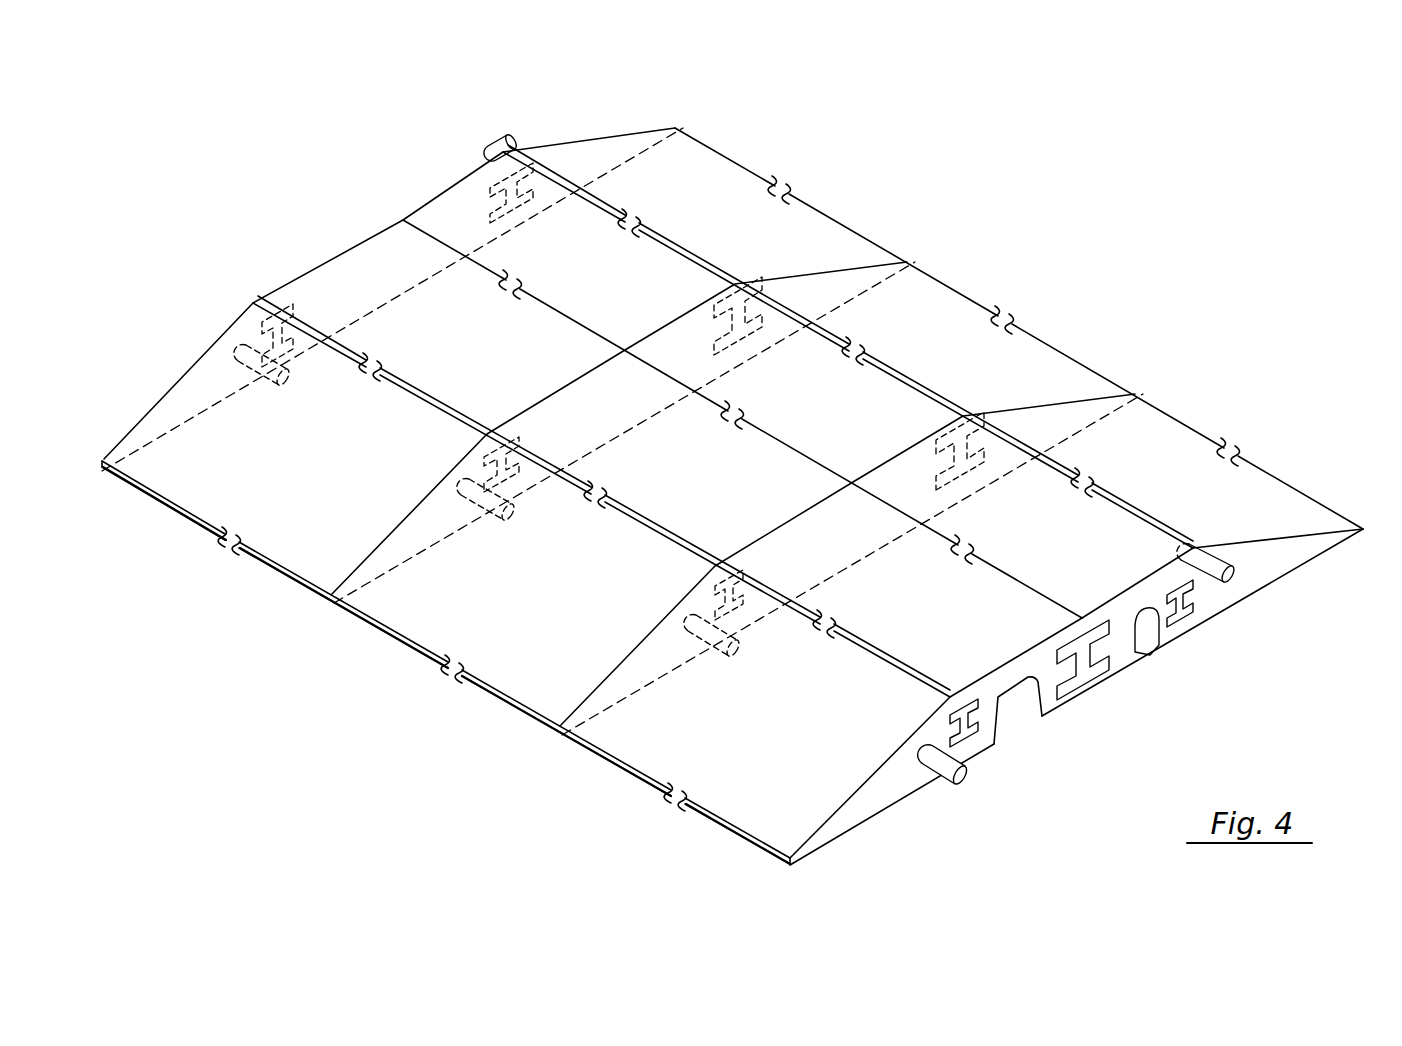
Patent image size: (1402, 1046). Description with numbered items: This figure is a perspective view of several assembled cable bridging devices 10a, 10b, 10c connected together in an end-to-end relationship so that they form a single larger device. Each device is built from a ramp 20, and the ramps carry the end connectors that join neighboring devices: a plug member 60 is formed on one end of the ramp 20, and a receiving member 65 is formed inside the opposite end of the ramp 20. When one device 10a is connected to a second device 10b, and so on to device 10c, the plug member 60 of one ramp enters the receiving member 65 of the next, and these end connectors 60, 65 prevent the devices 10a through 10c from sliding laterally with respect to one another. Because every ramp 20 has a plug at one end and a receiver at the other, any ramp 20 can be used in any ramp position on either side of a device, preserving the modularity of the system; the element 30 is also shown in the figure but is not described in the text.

The cable bridging device 10a is at (1250, 412).
The cable bridging device 10b is at (1032, 283).
The cable bridging device 10c is at (815, 153).
The ramp 20 is at (772, 793).
The cable channel 30 is at (965, 630).
The plug member 60 is at (486, 148).
The receiving member 65 is at (236, 367).